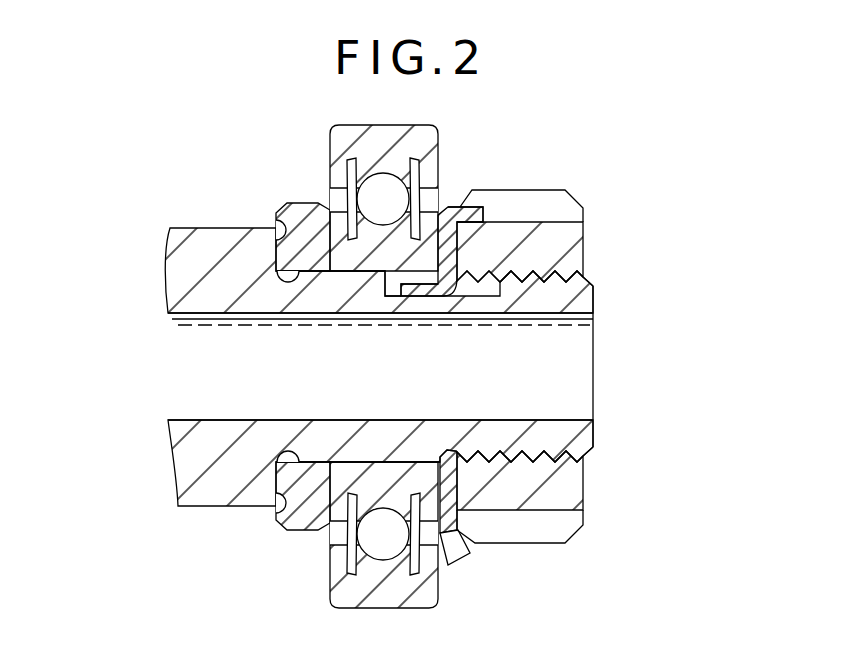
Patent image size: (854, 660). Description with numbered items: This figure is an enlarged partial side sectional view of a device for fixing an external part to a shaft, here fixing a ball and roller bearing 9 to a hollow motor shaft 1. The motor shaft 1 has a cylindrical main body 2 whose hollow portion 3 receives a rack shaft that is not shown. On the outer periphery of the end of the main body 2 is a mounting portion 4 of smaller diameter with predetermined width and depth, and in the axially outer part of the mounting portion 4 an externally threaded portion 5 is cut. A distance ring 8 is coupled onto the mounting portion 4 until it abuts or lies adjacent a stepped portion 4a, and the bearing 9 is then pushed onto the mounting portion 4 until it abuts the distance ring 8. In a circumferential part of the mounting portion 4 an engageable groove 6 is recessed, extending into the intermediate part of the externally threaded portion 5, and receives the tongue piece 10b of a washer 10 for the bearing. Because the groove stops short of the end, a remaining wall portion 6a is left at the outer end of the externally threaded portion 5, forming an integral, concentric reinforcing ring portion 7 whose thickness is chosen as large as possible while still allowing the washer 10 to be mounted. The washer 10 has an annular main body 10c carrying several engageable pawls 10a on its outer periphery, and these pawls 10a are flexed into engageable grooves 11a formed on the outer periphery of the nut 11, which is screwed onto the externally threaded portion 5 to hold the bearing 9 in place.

The motor shaft 1 is at (185, 226).
The main body 2 is at (165, 227).
The hollow portion 3 is at (197, 316).
The mounting portion 4 is at (320, 269).
The stepped portion 4a is at (281, 230).
The externally threaded portion 5 is at (550, 470).
The engageable groove 6 is at (474, 293).
The remaining wall portion 6a is at (584, 290).
The reinforcing ring portion 7 is at (597, 303).
The distance ring 8 is at (288, 205).
The ball and roller bearing 9 is at (358, 125).
The washer for a bearing 10 is at (448, 203).
The engageable pawl 10a is at (511, 167).
The tongue piece 10b is at (413, 292).
The main body 10c is at (452, 483).
The nut 11 is at (586, 226).
The engageable groove 11a is at (554, 201).